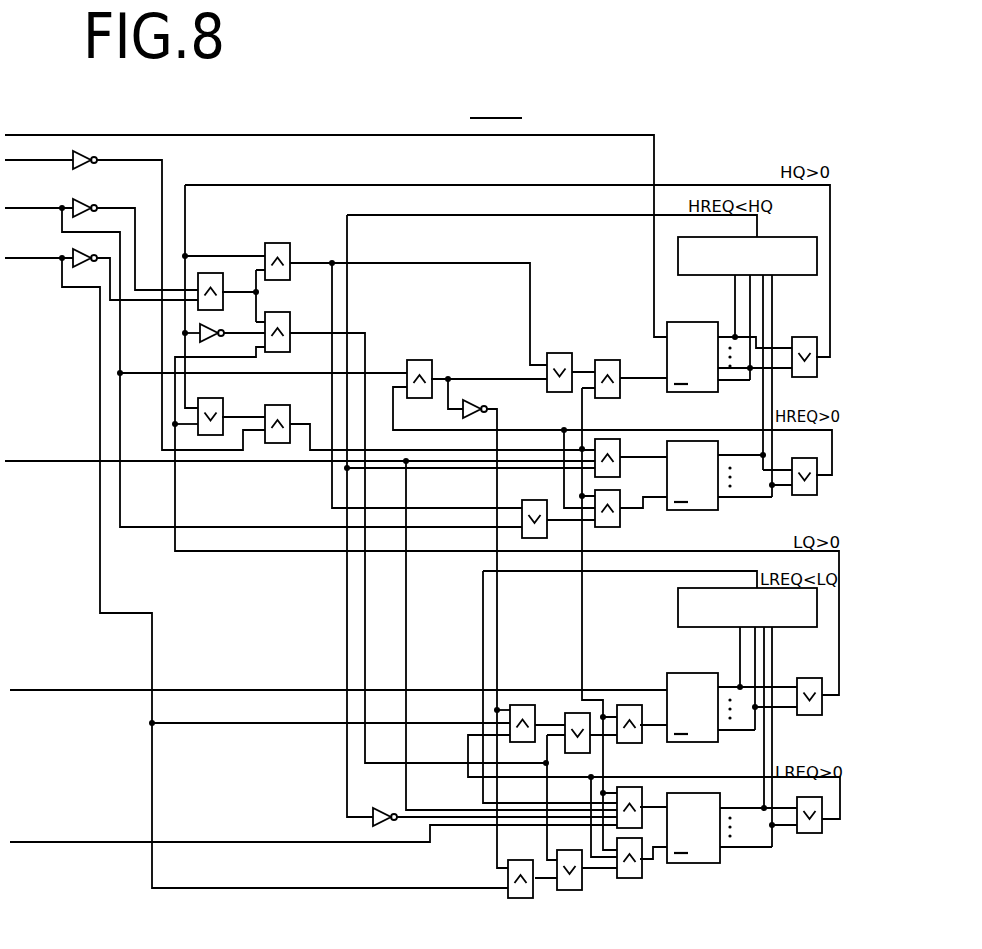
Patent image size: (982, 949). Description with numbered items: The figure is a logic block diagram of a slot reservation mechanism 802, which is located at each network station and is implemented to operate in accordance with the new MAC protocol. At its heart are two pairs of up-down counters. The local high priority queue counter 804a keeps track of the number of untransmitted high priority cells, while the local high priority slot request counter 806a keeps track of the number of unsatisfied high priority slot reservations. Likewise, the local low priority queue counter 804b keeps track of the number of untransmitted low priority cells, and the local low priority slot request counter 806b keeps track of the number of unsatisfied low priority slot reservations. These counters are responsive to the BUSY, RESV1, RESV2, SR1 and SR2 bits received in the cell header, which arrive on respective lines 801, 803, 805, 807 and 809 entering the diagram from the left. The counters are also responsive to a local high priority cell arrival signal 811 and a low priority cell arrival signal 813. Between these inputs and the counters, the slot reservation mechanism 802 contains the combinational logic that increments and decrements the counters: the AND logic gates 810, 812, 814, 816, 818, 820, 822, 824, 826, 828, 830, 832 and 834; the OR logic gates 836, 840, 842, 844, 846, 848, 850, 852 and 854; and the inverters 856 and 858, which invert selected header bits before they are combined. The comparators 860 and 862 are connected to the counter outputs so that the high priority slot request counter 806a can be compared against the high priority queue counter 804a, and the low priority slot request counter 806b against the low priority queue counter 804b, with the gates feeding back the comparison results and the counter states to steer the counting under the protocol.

The BUSY bit line 801 is at (12, 161).
The slot reservation mechanism 802 is at (496, 107).
The RESV1 bit line 803 is at (12, 209).
The local high priority queue counter 804a is at (690, 322).
The local low priority queue counter 804b is at (690, 672).
The RESV2 bit line 805 is at (32, 259).
The local high priority slot request counter 806a is at (690, 440).
The local low priority slot request counter 806b is at (690, 792).
The SR1 bit line 807 is at (25, 463).
The SR2 bit line 809 is at (40, 843).
The AND logic gate 810 is at (210, 273).
The local high priority cell arrival signal 811 is at (336, 134).
The AND logic gate 812 is at (278, 243).
The low priority cell arrival signal 813 is at (205, 689).
The AND logic gate 814 is at (282, 312).
The AND logic gate 816 is at (280, 405).
The AND logic gate 818 is at (420, 360).
The AND logic gate 820 is at (608, 360).
The AND logic gate 822 is at (616, 439).
The AND logic gate 824 is at (628, 528).
The AND logic gate 826 is at (522, 705).
The AND logic gate 828 is at (628, 705).
The AND logic gate 830 is at (525, 860).
The AND logic gate 832 is at (650, 770).
The AND logic gate 834 is at (630, 878).
The OR logic gate 836 is at (208, 398).
The OR logic gate 840 is at (558, 353).
The OR logic gate 842 is at (803, 337).
The OR logic gate 844 is at (580, 480).
The OR logic gate 846 is at (805, 495).
The OR logic gate 848 is at (575, 713).
The OR logic gate 850 is at (565, 890).
The OR logic gate 852 is at (818, 678).
The OR logic gate 854 is at (812, 833).
The inverter 856 is at (380, 808).
The inverter 858 is at (473, 397).
The comparator 860 is at (772, 237).
The comparator 862 is at (817, 605).